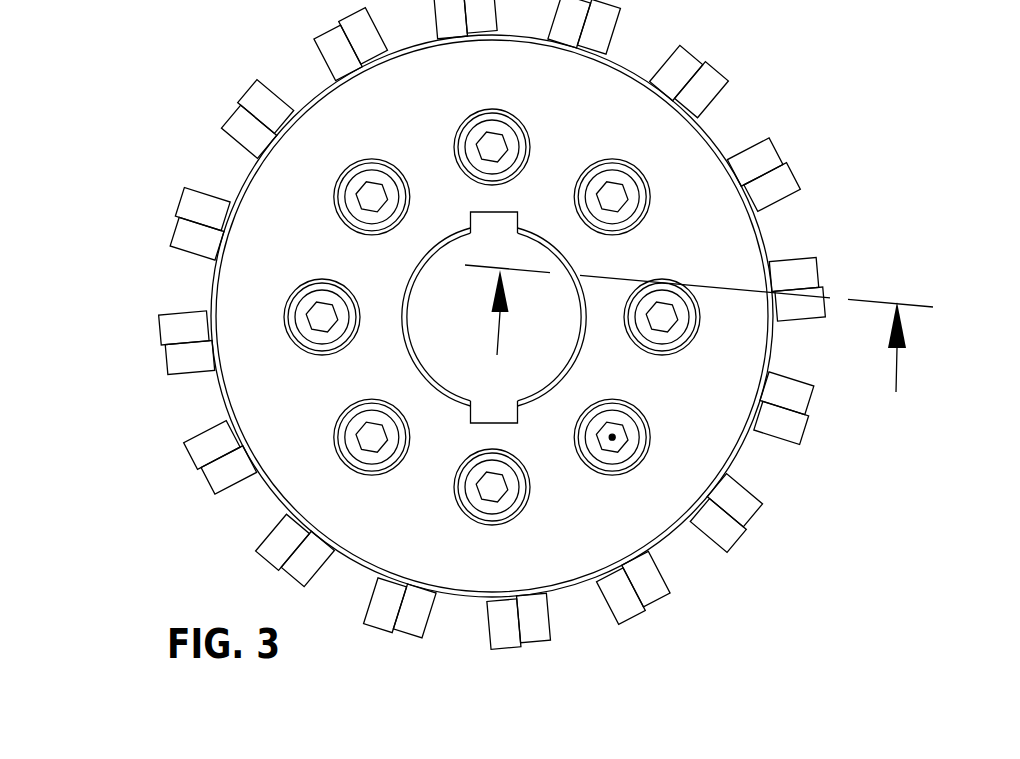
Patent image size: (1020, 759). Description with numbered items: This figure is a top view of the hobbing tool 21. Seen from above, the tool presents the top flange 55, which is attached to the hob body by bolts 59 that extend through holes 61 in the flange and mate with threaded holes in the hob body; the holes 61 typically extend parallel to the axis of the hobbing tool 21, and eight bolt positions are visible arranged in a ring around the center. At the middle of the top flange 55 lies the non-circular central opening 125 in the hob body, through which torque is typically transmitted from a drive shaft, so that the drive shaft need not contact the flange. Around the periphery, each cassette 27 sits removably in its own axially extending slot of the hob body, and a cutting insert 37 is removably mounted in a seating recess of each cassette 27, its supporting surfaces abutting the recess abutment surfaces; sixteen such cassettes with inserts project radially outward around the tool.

The hobbing tool 21 is at (191, 98).
The cassette 27 is at (208, 257).
The cutting insert 37 is at (208, 220).
The top flange 55 is at (675, 198).
The bolt 59 is at (598, 467).
The hole 61 is at (614, 436).
The non-circular central opening 125 is at (445, 325).